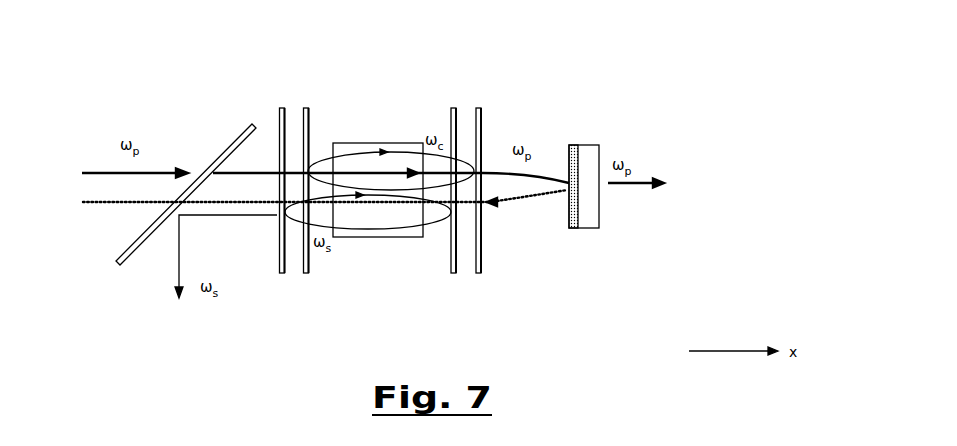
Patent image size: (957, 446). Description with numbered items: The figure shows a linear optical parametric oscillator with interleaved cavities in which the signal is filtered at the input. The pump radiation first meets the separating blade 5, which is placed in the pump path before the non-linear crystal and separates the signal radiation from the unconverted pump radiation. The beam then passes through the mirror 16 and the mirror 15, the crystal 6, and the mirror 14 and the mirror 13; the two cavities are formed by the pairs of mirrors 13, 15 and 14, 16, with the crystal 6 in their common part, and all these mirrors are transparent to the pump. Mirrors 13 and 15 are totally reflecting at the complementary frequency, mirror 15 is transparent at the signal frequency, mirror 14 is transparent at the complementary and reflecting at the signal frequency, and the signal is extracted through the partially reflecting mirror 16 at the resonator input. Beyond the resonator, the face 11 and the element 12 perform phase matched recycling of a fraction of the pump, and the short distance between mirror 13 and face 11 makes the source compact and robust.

The separating blade 5 is at (250, 125).
The crystal 6 is at (417, 233).
The face 11 is at (573, 145).
The pump recycling element 12 is at (588, 202).
The mirror 13 is at (478, 108).
The mirror 14 is at (453, 108).
The mirror 15 is at (307, 108).
The mirror 16 is at (282, 108).